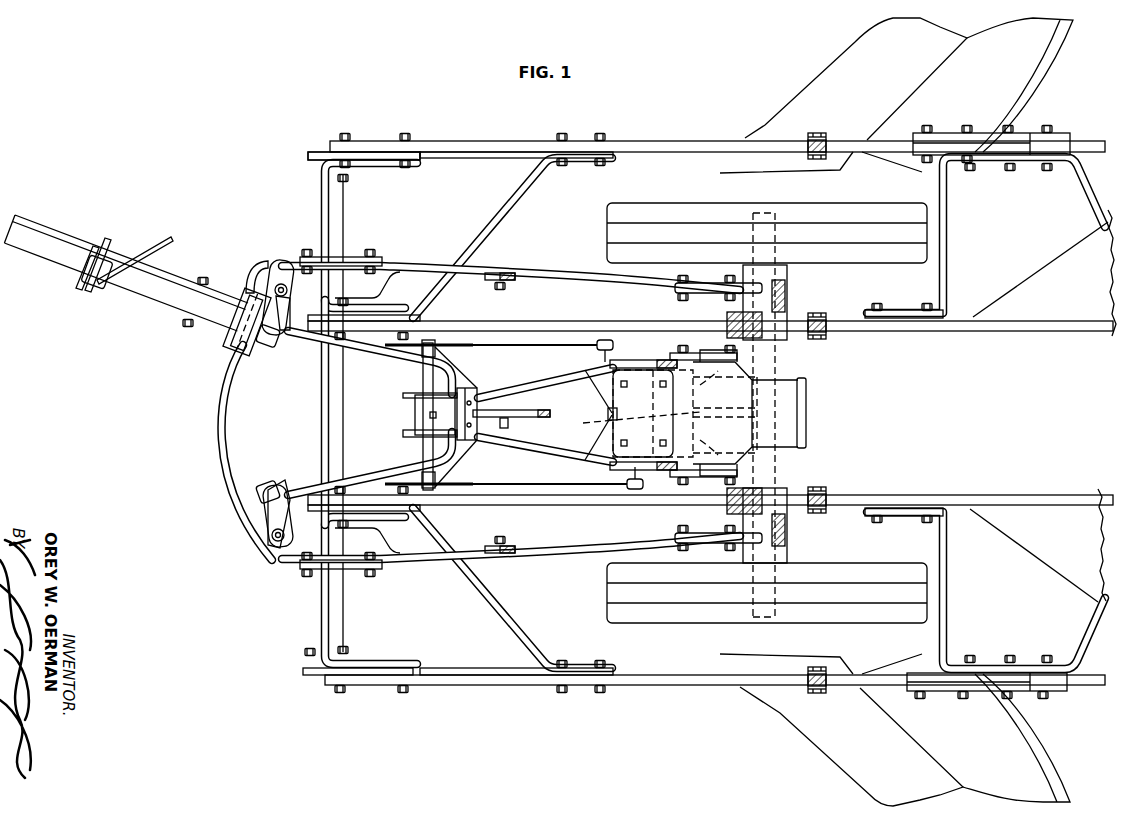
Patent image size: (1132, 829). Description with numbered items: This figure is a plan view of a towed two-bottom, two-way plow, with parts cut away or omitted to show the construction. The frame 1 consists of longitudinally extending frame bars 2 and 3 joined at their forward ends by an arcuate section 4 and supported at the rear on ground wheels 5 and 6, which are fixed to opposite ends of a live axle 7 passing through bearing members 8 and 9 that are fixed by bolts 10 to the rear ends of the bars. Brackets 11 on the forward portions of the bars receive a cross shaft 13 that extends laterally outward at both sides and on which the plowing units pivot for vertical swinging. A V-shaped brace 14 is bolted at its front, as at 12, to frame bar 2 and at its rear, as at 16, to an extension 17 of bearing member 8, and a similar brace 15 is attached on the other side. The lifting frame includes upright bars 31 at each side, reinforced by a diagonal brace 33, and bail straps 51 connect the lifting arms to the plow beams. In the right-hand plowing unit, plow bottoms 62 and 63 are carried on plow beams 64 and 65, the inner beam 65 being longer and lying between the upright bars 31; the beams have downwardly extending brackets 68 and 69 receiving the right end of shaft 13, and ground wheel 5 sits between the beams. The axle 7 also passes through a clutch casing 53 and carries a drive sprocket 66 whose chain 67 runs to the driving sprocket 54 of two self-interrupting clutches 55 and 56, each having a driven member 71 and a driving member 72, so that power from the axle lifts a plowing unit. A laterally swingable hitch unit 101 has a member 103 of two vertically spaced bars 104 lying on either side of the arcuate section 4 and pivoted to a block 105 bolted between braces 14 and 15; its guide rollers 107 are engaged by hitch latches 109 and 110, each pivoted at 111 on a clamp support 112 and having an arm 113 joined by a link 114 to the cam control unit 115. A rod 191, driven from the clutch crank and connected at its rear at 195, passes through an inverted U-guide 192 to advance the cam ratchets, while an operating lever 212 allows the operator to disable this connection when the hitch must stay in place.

The frame 1 is at (516, 263).
The frame bar 2 is at (578, 280).
The frame bar 3 is at (560, 546).
The arcuate section 4 is at (222, 440).
The ground wheel 5 is at (668, 203).
The ground wheel 6 is at (646, 616).
The live axle 7 is at (785, 296).
The bearing member 8 is at (770, 266).
The bearing member 9 is at (770, 535).
The bolts 10 is at (730, 278).
The brackets 11 is at (378, 262).
The bolted front connection of brace 12 is at (345, 529).
The cross shaft 13 is at (320, 429).
The V-shaped brace 14 is at (558, 383).
The brace 15 is at (556, 446).
The bolted rear connection of brace 16 is at (685, 347).
The extension 17 is at (660, 360).
The upright bars 31 is at (735, 323).
The diagonal brace 33 is at (498, 273).
The bail straps 51 is at (827, 146).
The clutch casing 53 is at (807, 410).
The driving sprocket 54 is at (588, 423).
The self-interrupting clutch 55 is at (707, 387).
The self-interrupting clutch 56 is at (710, 447).
The plow bottom 62 is at (845, 78).
The plow bottom 63 is at (1057, 283).
The plow beam 64 is at (662, 141).
The plow beam 65 is at (873, 333).
The drive sprocket 66 is at (780, 385).
The chain 67 is at (718, 380).
The bracket 68 is at (384, 152).
The bracket 69 is at (413, 320).
The driven member 71 is at (603, 369).
The driving member 72 is at (653, 413).
The hitch unit 101 is at (130, 308).
The laterally swingable member 103 is at (230, 289).
The bars 104 is at (228, 320).
The block 105 is at (506, 428).
The rollers 107 is at (252, 266).
The hitch latch 109 is at (286, 322).
The hitch latch 110 is at (258, 525).
The pivot 111 is at (284, 284).
The clamp support 112 is at (258, 262).
The arm 113 is at (258, 348).
The link 114 is at (372, 376).
The cam control unit 115 is at (467, 375).
The rod 191 is at (532, 343).
The inverted U-guide 192 is at (432, 340).
The rear connection of rod 195 is at (603, 339).
The operating lever 212 is at (535, 412).